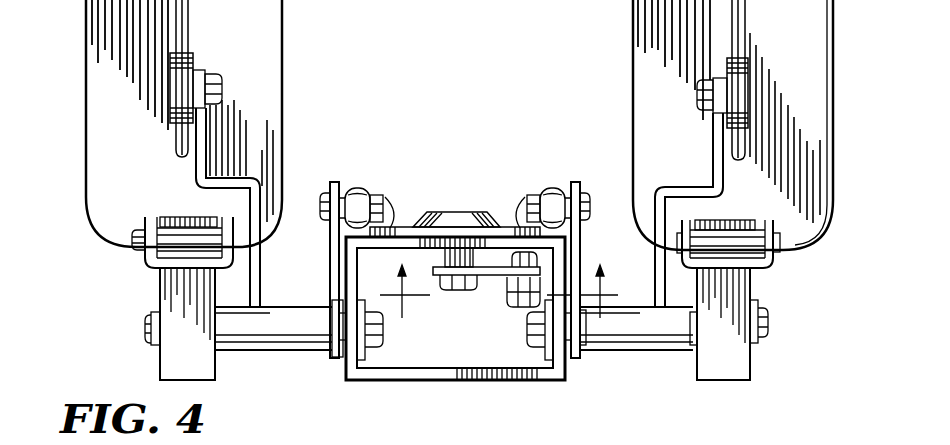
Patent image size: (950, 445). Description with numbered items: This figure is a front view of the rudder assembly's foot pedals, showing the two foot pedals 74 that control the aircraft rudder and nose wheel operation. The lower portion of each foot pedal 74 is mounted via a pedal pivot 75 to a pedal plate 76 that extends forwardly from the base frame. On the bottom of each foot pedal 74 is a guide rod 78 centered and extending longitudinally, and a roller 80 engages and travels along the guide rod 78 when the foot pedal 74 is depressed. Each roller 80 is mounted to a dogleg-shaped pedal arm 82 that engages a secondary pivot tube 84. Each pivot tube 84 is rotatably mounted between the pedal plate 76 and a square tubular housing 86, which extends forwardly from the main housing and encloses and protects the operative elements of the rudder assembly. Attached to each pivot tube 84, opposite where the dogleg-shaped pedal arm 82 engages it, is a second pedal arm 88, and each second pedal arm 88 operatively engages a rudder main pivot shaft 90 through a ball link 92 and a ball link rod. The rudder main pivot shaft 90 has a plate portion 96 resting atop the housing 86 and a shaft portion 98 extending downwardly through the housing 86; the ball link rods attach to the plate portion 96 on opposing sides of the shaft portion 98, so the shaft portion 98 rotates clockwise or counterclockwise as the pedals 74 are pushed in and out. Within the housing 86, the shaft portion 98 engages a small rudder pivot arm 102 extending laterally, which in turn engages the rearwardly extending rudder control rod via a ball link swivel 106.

The foot pedal 74 is at (267, 57).
The pedal pivot 75 is at (168, 250).
The pedal plate 76 is at (177, 360).
The guide rod 78 is at (188, 23).
The roller 80 is at (192, 62).
The dogleg-shaped pedal arm 82 is at (201, 147).
The secondary pivot tube 84 is at (263, 335).
The square tubular housing 86 is at (398, 373).
The second pedal arm 88 is at (333, 250).
The rudder main pivot shaft 90 is at (462, 213).
The ball link 92 is at (382, 155).
The plate portion 96 is at (403, 227).
The shaft portion 98 is at (467, 293).
The small rudder pivot arm 102 is at (487, 275).
The ball link swivel 106 is at (540, 284).